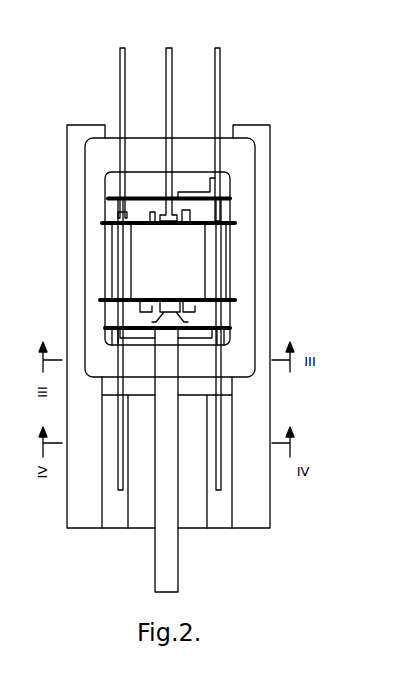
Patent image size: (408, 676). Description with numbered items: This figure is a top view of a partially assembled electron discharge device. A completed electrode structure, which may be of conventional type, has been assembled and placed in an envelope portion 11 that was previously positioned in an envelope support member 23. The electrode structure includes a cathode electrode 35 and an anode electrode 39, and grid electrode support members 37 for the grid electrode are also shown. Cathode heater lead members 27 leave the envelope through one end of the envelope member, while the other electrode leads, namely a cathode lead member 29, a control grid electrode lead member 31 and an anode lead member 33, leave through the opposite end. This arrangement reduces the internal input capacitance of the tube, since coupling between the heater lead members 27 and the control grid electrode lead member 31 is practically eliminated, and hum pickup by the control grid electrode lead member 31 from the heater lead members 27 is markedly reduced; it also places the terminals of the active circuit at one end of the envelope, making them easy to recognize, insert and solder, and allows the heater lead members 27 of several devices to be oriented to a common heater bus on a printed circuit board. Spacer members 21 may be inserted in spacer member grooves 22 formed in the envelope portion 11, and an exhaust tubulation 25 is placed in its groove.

The envelope portion 11 is at (222, 138).
The spacer member 21 is at (102, 222).
The spacer member groove 22 is at (104, 226).
The envelope support member 23 is at (258, 401).
The exhaust tubulation 25 is at (178, 565).
The cathode heater lead member 27 is at (118, 482).
The cathode lead member 29 is at (176, 42).
The control grid electrode lead member 31 is at (224, 42).
The anode lead member 33 is at (130, 42).
The cathode electrode 35 is at (167, 302).
The grid electrode support member 37 is at (144, 302).
The anode electrode 39 is at (200, 270).